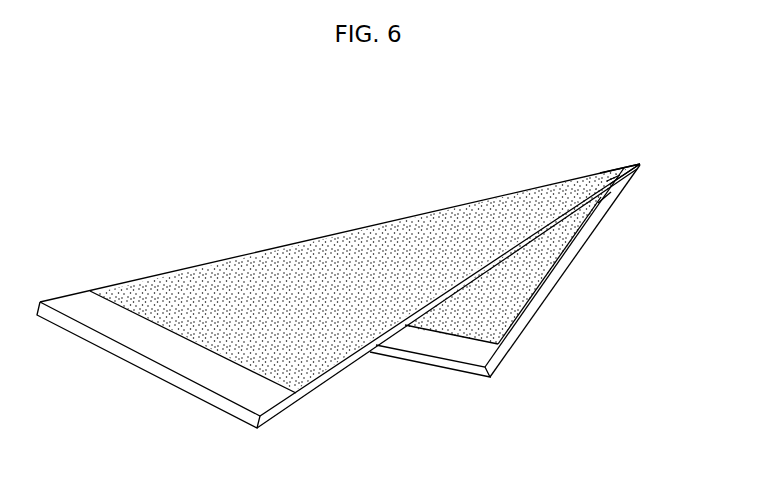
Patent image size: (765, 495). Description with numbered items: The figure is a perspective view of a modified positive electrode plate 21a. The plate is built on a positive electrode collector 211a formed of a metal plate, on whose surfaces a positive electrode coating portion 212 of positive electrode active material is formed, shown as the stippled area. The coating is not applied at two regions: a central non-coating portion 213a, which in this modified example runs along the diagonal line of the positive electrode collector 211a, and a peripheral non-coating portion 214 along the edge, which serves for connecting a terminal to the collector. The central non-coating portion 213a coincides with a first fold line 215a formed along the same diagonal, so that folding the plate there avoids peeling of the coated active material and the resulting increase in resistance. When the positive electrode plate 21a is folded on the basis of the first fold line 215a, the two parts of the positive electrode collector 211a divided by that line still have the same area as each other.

The positive electrode plate 21a is at (182, 213).
The positive electrode collector 211a is at (526, 311).
The positive electrode coating portion 212 is at (333, 366).
The central non-coating portion 213a is at (621, 166).
The peripheral non-coating portion 214 is at (217, 382).
The first fold line 215a is at (643, 162).